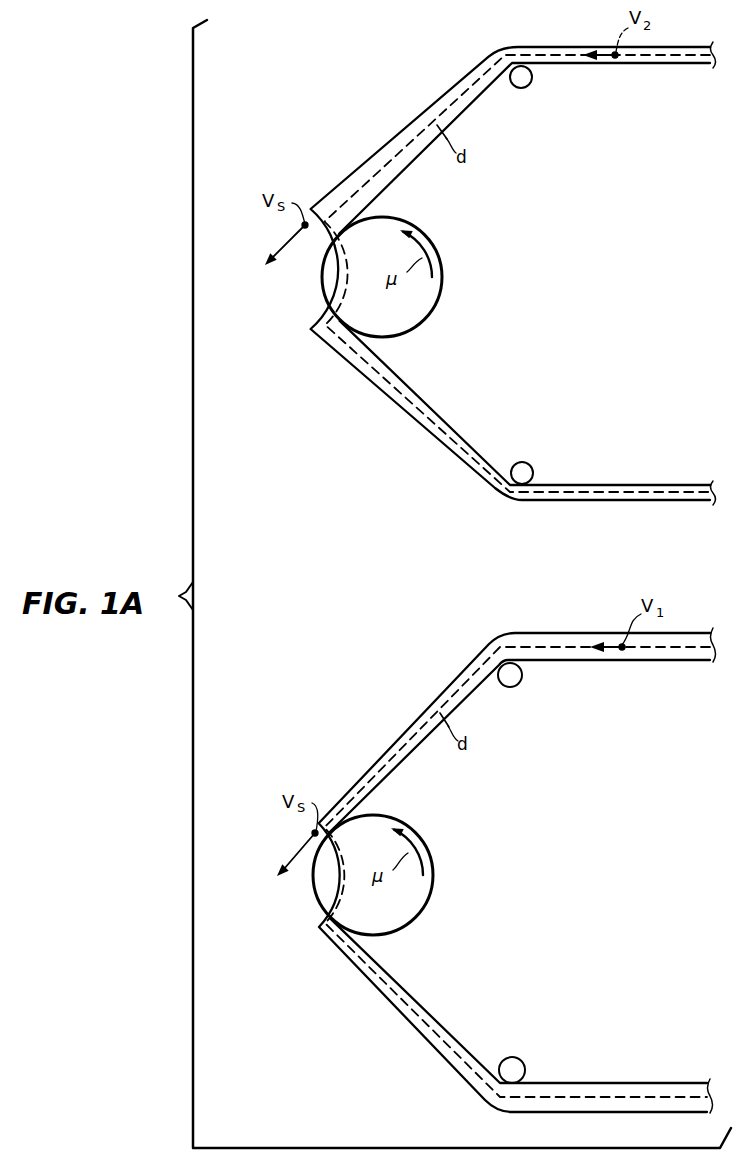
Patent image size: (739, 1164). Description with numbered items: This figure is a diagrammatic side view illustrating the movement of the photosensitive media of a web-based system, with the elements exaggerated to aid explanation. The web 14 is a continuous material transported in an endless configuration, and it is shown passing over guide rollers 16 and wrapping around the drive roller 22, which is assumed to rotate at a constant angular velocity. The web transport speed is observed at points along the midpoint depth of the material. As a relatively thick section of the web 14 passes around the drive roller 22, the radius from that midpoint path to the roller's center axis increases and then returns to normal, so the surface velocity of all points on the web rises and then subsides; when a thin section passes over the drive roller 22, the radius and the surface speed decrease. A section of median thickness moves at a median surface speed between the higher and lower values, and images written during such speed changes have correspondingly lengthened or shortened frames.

The web 14 is at (428, 433).
The guide roller 16 is at (532, 82).
The drive roller 22 is at (438, 298).